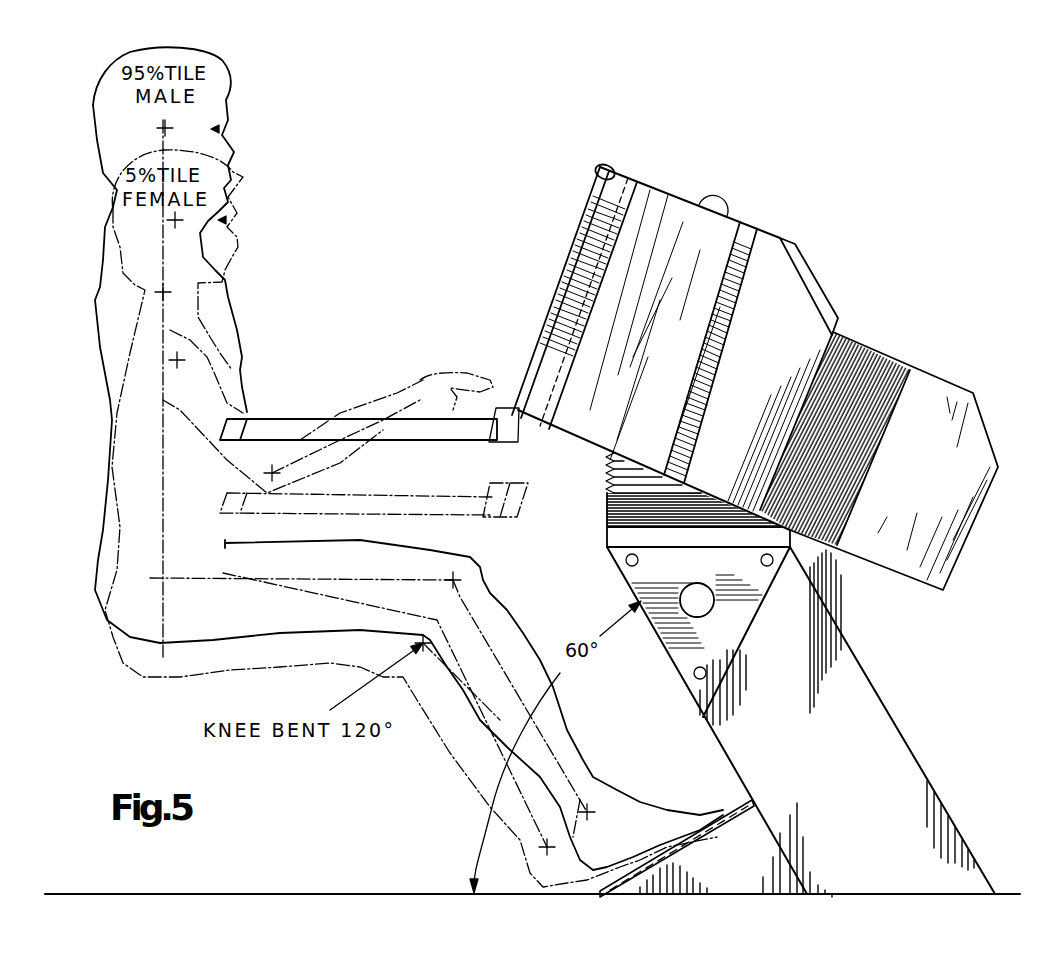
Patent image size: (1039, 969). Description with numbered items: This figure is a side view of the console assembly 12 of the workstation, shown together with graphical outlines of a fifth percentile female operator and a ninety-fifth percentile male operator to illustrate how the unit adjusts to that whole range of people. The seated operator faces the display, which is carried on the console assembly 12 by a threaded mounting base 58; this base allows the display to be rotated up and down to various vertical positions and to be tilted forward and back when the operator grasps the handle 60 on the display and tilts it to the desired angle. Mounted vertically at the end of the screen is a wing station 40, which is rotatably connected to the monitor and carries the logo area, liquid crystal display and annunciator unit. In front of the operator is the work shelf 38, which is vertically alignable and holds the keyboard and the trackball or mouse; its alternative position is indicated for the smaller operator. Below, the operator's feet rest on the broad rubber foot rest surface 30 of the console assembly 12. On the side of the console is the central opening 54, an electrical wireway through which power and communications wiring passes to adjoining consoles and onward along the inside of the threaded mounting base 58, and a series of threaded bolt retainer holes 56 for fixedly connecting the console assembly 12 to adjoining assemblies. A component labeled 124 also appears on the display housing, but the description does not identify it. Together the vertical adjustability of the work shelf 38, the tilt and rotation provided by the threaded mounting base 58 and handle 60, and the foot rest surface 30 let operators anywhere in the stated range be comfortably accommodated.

The console assembly 12 is at (915, 290).
The rubber foot rest surface 30 is at (742, 800).
The work shelf 38 is at (290, 415).
The wing station 40 is at (572, 300).
The central opening 54 is at (710, 603).
The threaded bolt retainer holes 56 is at (624, 560).
The threaded mounting base 58 is at (607, 490).
The handle 60 is at (597, 170).
The side panel 124 is at (783, 374).